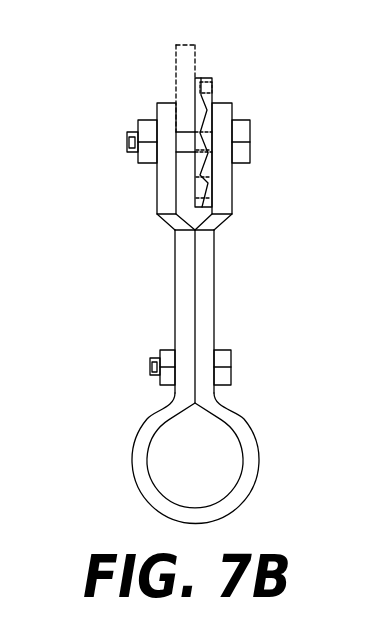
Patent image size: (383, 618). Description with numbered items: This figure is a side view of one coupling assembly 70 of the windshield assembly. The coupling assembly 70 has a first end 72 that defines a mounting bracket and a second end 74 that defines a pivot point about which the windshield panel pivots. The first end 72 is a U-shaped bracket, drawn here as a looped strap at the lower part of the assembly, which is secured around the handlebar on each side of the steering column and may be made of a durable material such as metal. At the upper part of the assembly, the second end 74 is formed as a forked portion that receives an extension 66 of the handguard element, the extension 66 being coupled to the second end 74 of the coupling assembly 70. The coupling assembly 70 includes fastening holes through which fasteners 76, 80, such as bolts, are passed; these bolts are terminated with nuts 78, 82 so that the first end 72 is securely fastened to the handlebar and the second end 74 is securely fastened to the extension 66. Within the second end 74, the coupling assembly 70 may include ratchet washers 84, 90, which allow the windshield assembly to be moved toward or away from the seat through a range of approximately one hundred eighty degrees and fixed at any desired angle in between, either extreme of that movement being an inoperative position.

The extension 66 is at (174, 82).
The coupling assembly 70 is at (270, 280).
The first end 72 is at (78, 432).
The second end 74 is at (78, 153).
The fastener 76 is at (250, 135).
The nut 78 is at (148, 118).
The fastener 80 is at (225, 350).
The nut 82 is at (169, 350).
The ratchet washer 84 is at (197, 78).
The ratchet washer 90 is at (211, 90).